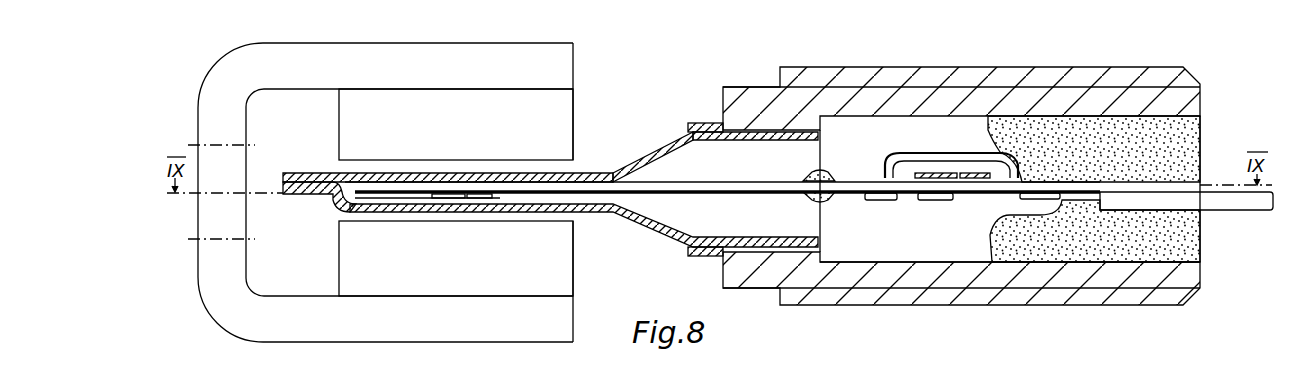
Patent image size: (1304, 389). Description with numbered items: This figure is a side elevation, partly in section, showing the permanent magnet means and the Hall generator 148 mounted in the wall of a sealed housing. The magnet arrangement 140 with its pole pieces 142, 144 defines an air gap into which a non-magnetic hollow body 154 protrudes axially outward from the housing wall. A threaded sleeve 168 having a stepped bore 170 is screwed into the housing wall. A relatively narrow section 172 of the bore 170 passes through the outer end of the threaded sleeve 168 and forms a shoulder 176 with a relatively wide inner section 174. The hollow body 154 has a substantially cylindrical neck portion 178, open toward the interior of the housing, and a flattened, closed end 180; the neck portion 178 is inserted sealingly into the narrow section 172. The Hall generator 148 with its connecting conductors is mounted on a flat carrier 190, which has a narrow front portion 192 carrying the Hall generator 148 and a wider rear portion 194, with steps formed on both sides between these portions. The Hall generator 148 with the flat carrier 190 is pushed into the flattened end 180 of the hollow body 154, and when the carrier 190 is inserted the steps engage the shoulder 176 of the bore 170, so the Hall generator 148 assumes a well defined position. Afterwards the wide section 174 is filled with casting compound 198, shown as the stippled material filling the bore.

The U-shaped support bracket 140 is at (443, 52).
The upper clamping block 142 is at (567, 114).
The lower clamping block 144 is at (566, 280).
The center conductor 148 is at (468, 190).
The tapered transition of sheath 154 is at (647, 157).
The housing 168 is at (960, 283).
The lower housing part 170 is at (855, 266).
The lower sheath wall 172 is at (748, 240).
The housing cavity 174 is at (918, 262).
The cavity wall 176 is at (821, 258).
The upper sheath wall 178 is at (782, 130).
The folded sheath end 180 is at (379, 208).
The insulating rod 190 is at (736, 182).
The outer sheath 192 is at (593, 177).
The sensor cap 194 is at (870, 186).
The potting compound 198 is at (1183, 142).